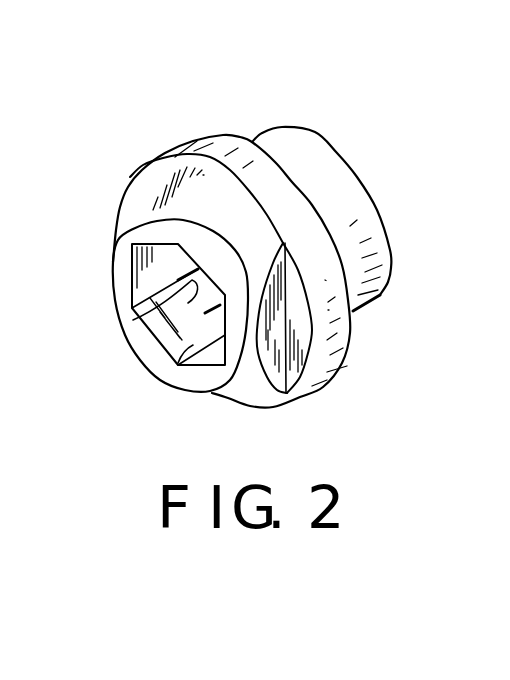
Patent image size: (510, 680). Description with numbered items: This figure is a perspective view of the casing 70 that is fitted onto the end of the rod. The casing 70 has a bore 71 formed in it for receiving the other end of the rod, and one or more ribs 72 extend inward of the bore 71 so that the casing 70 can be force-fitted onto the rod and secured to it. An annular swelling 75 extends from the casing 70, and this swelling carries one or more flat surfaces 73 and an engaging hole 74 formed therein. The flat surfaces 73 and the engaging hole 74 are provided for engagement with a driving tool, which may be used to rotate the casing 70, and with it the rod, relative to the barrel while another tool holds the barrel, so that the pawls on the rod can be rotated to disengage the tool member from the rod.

The casing 70 is at (243, 98).
The bore 71 is at (333, 163).
The ribs 72 is at (182, 310).
The flat surfaces 73 is at (124, 185).
The engaging hole 74 is at (178, 365).
The annular swelling 75 is at (325, 347).